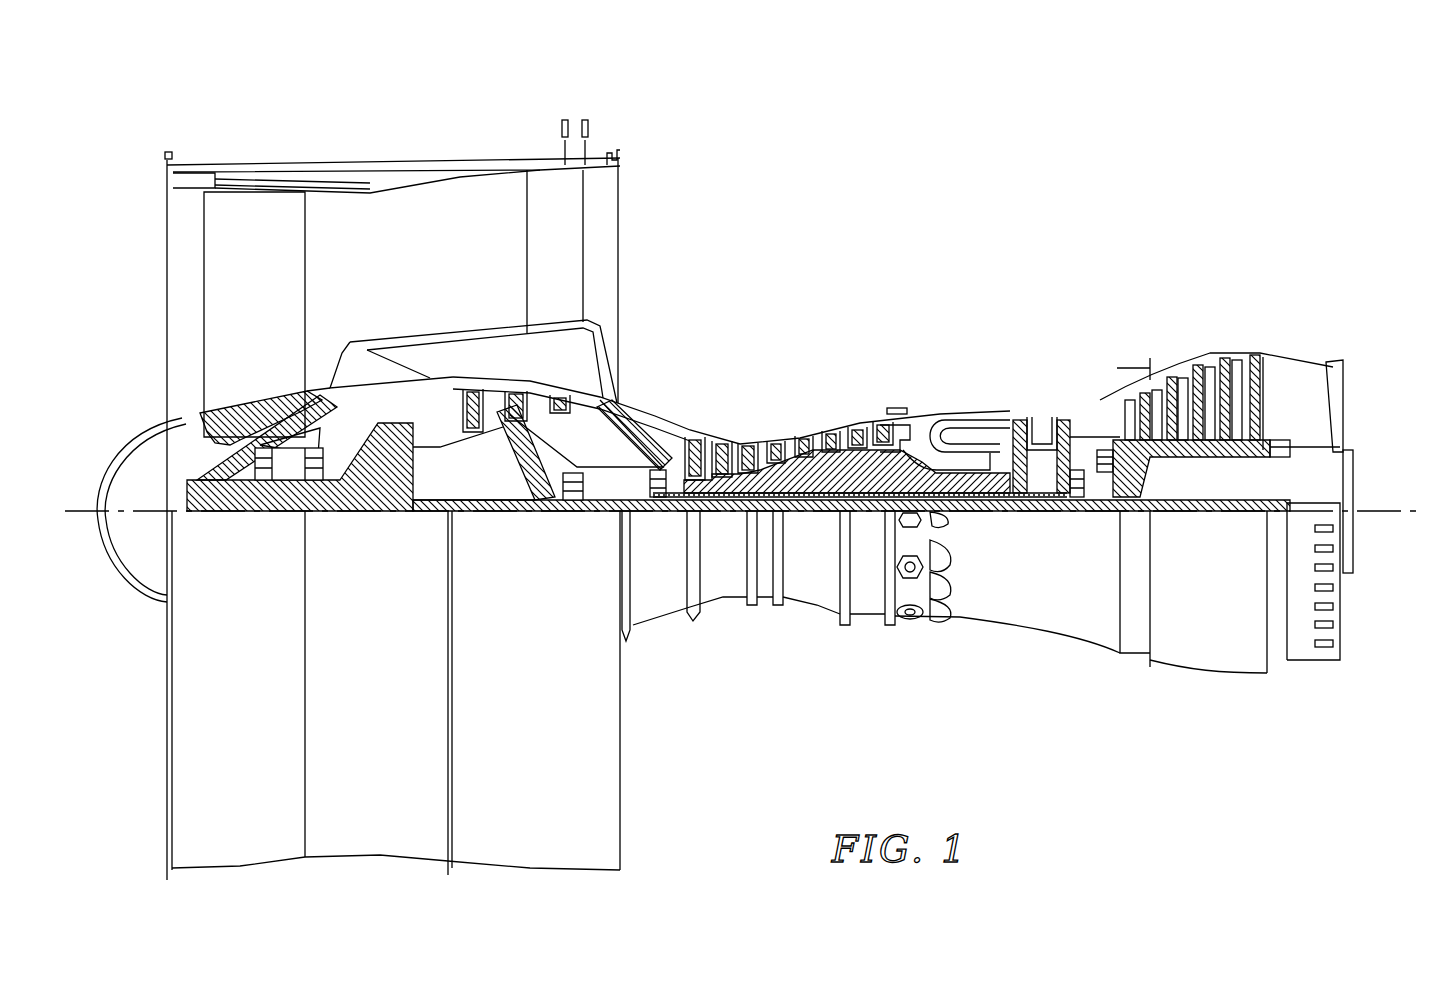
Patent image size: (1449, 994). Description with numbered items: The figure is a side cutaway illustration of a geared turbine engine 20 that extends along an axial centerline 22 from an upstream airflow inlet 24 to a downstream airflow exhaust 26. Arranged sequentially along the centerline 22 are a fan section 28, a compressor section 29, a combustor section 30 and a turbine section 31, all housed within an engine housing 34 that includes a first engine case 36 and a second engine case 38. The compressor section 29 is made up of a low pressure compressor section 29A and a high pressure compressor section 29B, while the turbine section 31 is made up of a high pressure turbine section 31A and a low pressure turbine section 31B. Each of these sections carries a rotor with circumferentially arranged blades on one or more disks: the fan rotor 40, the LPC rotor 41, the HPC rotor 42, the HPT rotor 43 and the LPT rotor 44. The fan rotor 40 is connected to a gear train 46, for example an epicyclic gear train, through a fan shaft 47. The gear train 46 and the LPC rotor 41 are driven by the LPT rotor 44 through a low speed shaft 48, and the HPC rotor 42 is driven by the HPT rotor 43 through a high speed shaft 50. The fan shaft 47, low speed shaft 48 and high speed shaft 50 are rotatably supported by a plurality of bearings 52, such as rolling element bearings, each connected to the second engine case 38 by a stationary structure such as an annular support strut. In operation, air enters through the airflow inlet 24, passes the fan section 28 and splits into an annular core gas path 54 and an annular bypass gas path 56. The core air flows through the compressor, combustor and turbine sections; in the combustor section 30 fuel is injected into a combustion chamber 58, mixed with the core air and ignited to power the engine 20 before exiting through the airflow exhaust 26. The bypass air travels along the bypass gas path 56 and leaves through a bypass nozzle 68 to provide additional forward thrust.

The geared turbine engine 20 is at (1185, 124).
The axial centerline 22 is at (1402, 506).
The upstream airflow inlet 24 is at (167, 222).
The downstream airflow exhaust 26 is at (1345, 392).
The fan section 28 is at (172, 138).
The compressor section 29 is at (438, 57).
The low pressure compressor section 29A is at (438, 120).
The high pressure compressor section 29B is at (865, 328).
The combustor section 30 is at (945, 372).
The turbine section 31 is at (1012, 253).
The high pressure turbine section 31A is at (1097, 328).
The low pressure turbine section 31B is at (1186, 420).
The engine housing 34 is at (635, 653).
The first engine case 36 is at (590, 872).
The second engine case 38 is at (868, 622).
The fan rotor 40 is at (192, 425).
The LPC rotor 41 is at (510, 470).
The HPC rotor 42 is at (807, 470).
The HPT rotor 43 is at (1043, 497).
The LPT rotor 44 is at (1200, 450).
The gear train 46 is at (400, 503).
The fan shaft 47 is at (213, 504).
The low speed shaft 48 is at (1213, 508).
The high speed shaft 50 is at (967, 500).
The bearings 52 is at (308, 479).
The annular core gas path 54 is at (646, 420).
The annular bypass gas path 56 is at (442, 292).
The combustion chamber 58 is at (958, 440).
The bypass nozzle 68 is at (620, 205).